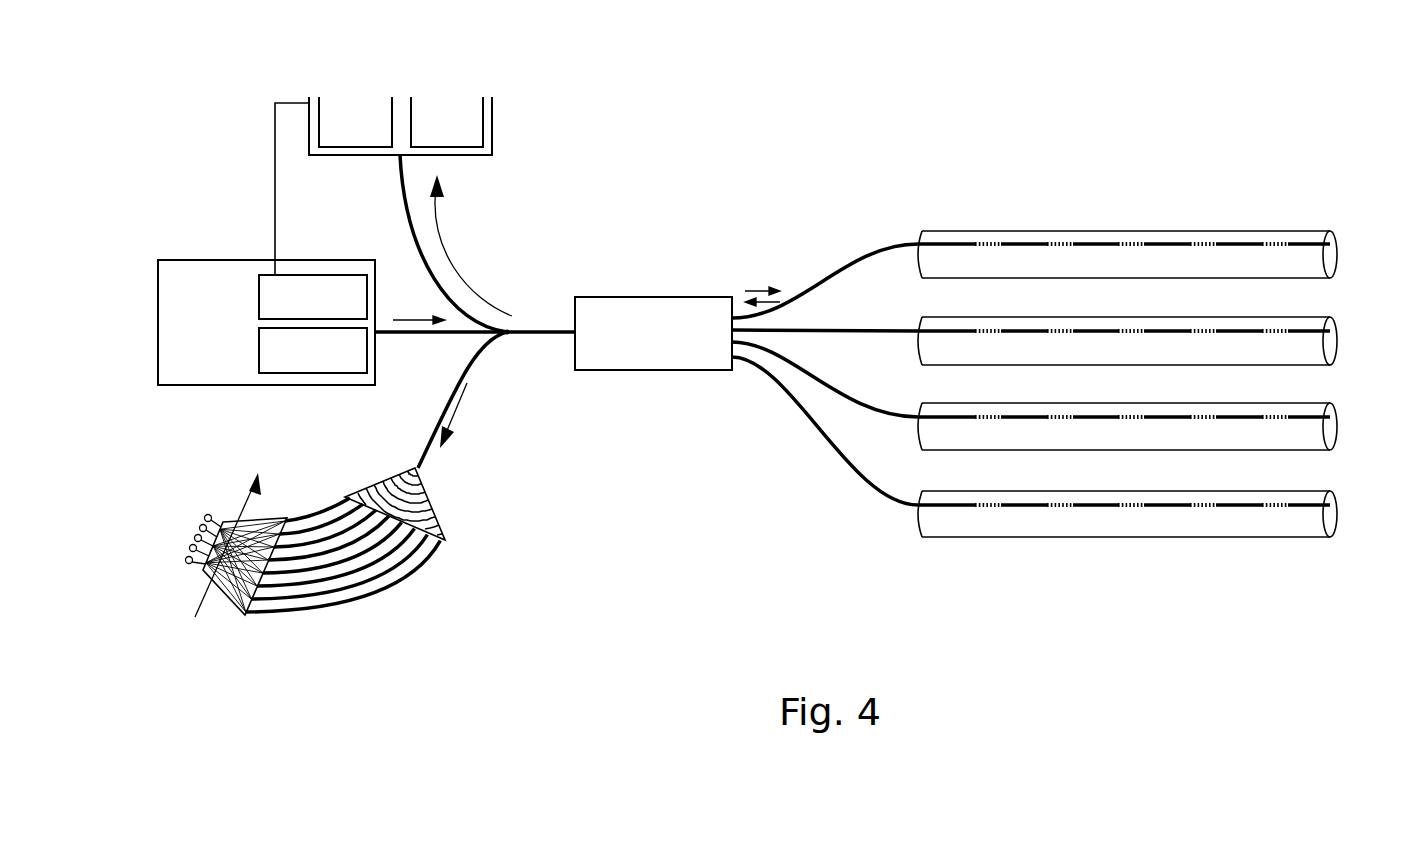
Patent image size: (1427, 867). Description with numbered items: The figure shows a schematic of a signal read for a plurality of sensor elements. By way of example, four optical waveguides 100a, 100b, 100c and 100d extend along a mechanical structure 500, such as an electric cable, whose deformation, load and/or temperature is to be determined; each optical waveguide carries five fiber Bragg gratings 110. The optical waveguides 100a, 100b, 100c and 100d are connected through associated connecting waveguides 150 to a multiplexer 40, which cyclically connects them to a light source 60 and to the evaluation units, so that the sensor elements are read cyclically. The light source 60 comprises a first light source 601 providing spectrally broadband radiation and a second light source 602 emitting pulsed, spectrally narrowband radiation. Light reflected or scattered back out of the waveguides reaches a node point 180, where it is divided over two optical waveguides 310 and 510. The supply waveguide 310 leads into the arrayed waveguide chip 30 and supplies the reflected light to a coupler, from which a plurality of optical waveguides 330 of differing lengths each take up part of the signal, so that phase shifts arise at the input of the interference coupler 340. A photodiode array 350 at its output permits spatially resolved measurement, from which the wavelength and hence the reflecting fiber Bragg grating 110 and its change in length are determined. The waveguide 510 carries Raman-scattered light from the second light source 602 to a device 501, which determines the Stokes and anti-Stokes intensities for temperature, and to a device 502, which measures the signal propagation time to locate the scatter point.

The device for measuring the signal propagation time 502 is at (378, 128).
The device determining Stokes and anti-Stokes intensities 501 is at (468, 128).
The optical waveguide 510 is at (400, 213).
The light source 60 is at (194, 337).
The second light source 602 is at (336, 312).
The first light source 601 is at (336, 365).
The node point 180 is at (510, 322).
The multiplexer 40 is at (639, 348).
The connecting waveguides 150 is at (872, 253).
The fiber Bragg gratings 110 is at (990, 247).
The mechanical structure 500 is at (1092, 258).
The optical waveguide 100a is at (1172, 221).
The optical waveguide 100b is at (1334, 336).
The optical waveguide 100c is at (1334, 422).
The optical waveguide 100d is at (1334, 510).
The supply waveguide 310 is at (427, 455).
The photodiode array 350 is at (185, 542).
The interference coupler 340 is at (229, 612).
The optical waveguides 330 is at (318, 610).
The arrayed waveguide chip 30 is at (312, 513).